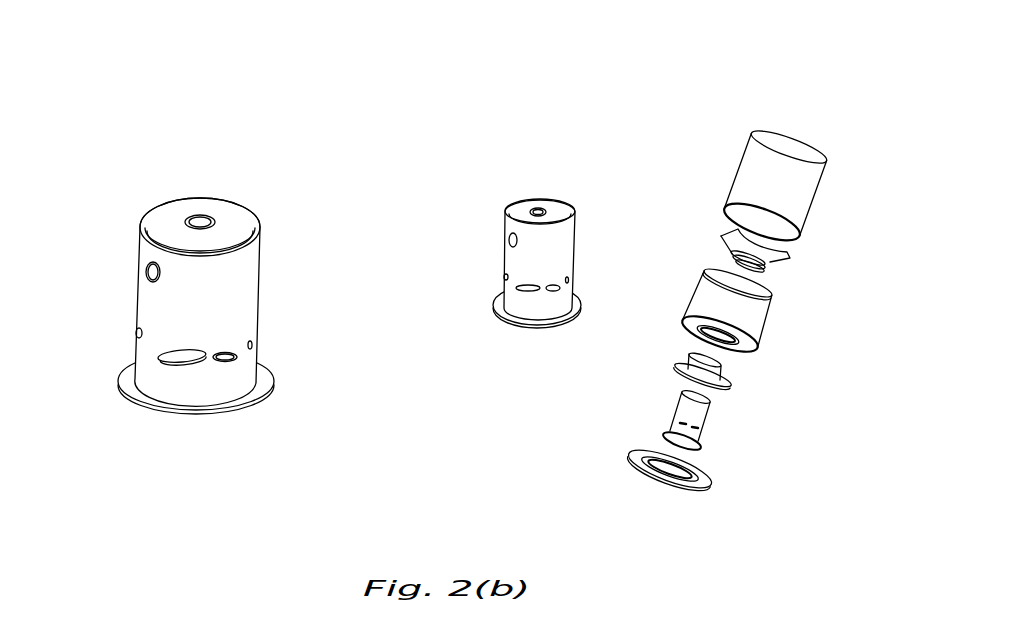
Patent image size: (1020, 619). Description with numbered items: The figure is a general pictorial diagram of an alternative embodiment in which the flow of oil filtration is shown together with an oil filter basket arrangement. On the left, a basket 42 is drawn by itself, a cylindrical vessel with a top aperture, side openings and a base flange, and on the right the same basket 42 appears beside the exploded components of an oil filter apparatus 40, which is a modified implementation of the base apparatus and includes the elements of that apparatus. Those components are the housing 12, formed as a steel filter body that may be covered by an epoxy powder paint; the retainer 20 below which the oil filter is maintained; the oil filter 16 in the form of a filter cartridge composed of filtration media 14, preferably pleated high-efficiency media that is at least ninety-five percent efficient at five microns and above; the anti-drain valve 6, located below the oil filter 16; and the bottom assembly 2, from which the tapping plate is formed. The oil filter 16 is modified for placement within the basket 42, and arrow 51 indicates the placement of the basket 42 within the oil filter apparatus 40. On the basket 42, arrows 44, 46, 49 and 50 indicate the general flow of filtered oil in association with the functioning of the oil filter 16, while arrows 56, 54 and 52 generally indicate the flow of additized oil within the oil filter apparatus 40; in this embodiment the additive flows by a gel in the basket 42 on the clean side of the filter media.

The bottom assembly 2 is at (715, 478).
The anti-drain valve 6 is at (706, 422).
The housing 12 is at (798, 200).
The filtration media 14 is at (757, 308).
The oil filter 16 is at (763, 332).
The retainer 20 is at (783, 255).
The oil filter apparatus 40 is at (620, 117).
The basket 42 is at (85, 212).
The arrow 44 is at (200, 220).
The arrow 46 is at (217, 158).
The arrow 49 is at (236, 347).
The arrow 50 is at (257, 333).
The arrow 51 is at (672, 405).
The arrow 52 is at (243, 420).
The arrow 54 is at (123, 473).
The arrow 56 is at (170, 348).